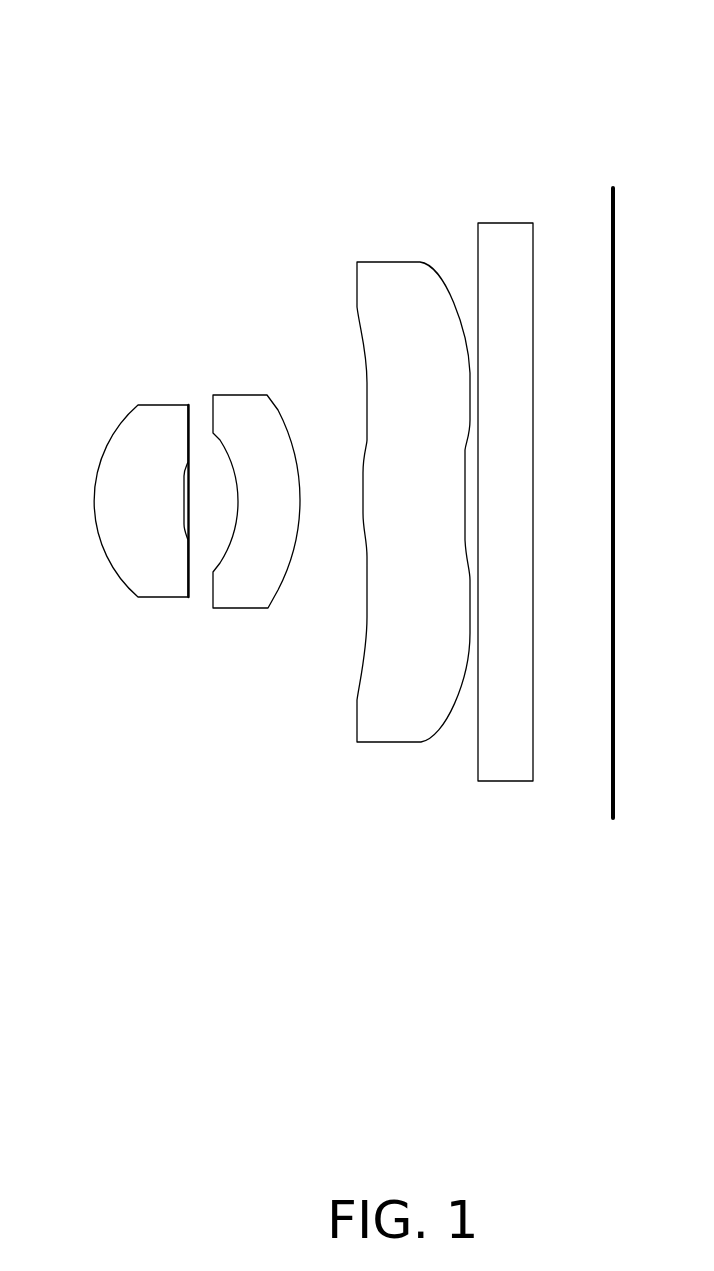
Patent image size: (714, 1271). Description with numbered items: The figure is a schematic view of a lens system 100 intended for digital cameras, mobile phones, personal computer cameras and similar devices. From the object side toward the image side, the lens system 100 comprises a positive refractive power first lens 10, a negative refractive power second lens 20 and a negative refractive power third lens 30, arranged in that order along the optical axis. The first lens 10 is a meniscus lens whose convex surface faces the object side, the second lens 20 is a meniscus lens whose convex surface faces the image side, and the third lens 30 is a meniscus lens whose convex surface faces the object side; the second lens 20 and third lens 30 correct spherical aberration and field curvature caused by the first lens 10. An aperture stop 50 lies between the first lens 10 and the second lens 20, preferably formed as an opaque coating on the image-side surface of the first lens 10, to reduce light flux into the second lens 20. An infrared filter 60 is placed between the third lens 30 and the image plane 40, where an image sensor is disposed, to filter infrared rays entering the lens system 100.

The lens system 100 is at (411, 47).
The first lens 10 is at (160, 583).
The second lens 20 is at (248, 593).
The third lens 30 is at (388, 718).
The image plane 40 is at (613, 818).
The aperture stop 50 is at (190, 588).
The infrared filter 60 is at (504, 765).